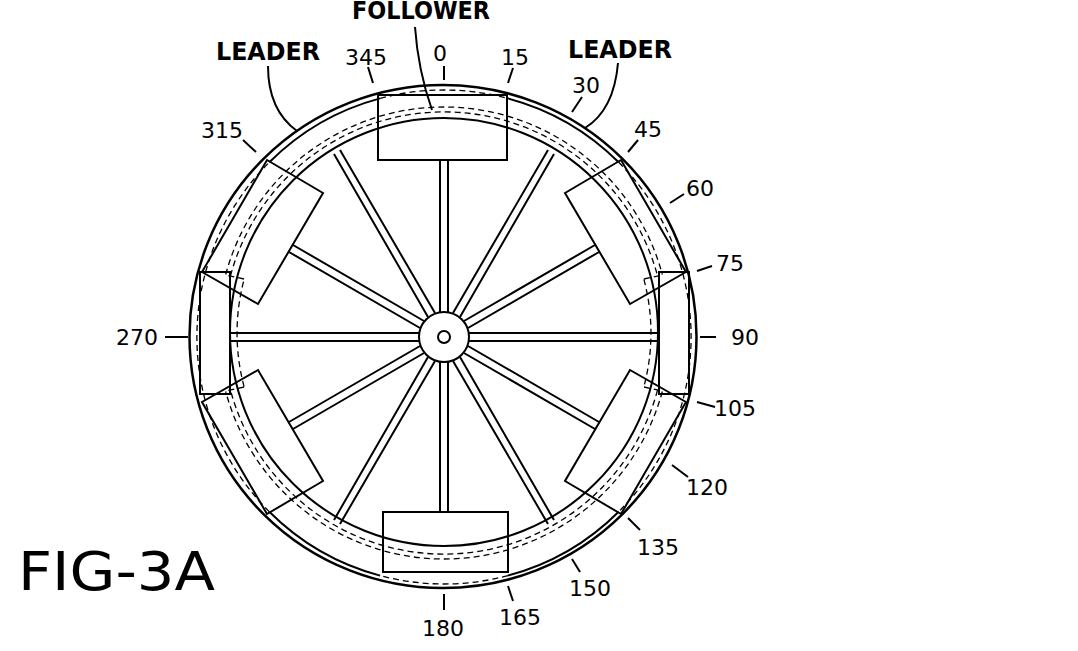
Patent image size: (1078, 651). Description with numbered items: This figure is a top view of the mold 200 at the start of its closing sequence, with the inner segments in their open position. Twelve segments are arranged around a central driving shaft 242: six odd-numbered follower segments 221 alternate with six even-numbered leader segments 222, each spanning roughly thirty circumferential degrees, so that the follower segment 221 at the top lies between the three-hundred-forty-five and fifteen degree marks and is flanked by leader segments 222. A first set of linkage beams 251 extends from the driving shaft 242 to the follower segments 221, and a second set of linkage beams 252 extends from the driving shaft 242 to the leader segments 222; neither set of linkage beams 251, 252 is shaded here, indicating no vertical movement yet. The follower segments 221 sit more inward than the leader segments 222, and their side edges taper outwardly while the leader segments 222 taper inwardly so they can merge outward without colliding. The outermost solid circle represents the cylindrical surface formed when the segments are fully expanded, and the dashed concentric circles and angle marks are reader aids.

The mold 200 is at (175, 170).
The follower segments 221 is at (444, 333).
The leader segments 222 is at (444, 337).
The driving shaft 242 is at (437, 328).
The first set of linkage beams 251 is at (448, 240).
The second set of linkage beams 252 is at (388, 238).